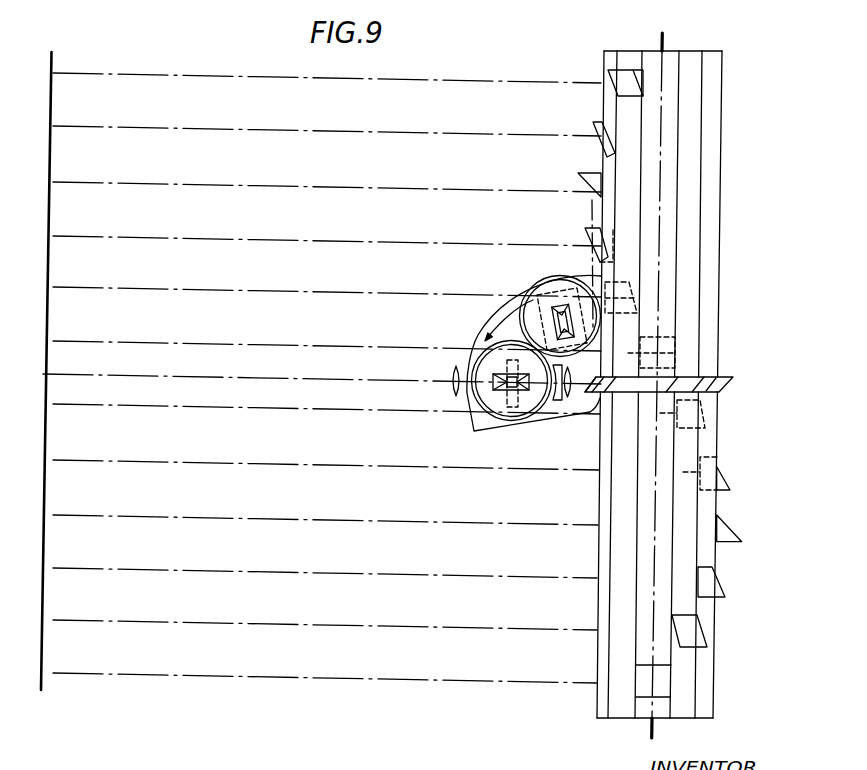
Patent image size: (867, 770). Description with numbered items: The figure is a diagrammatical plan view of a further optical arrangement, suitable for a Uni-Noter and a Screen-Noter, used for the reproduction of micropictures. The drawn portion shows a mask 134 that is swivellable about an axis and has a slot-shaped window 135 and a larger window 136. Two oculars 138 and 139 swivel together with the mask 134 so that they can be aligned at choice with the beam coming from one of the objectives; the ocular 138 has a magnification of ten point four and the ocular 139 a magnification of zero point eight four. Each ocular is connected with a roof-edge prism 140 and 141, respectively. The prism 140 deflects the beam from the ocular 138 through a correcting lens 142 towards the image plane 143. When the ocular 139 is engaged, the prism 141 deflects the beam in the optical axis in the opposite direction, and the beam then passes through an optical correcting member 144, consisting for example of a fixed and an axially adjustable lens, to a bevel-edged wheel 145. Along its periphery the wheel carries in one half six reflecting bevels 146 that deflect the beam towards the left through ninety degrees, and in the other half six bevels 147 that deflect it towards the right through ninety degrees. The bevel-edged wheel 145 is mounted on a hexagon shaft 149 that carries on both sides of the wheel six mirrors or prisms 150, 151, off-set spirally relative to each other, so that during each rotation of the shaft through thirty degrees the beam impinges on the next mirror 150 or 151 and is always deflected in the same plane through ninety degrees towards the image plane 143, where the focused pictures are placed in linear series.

The mask 134 is at (552, 402).
The slot-shaped window 135 is at (509, 418).
The larger window 136 is at (556, 305).
The ocular 138 is at (493, 358).
The ocular 139 is at (527, 312).
The roof-edge prism 140 is at (502, 390).
The roof-edge prism 141 is at (540, 292).
The correcting lens 142 is at (452, 378).
The image plane 143 is at (55, 62).
The optical correcting member 144 is at (567, 400).
The bevel-edged wheel 145 is at (727, 386).
The reflecting bevels 146 is at (604, 390).
The bevels 147 is at (700, 388).
The hexagon shaft 149 is at (723, 300).
The mirrors or prisms 150 is at (618, 87).
The mirrors or prisms 151 is at (690, 627).